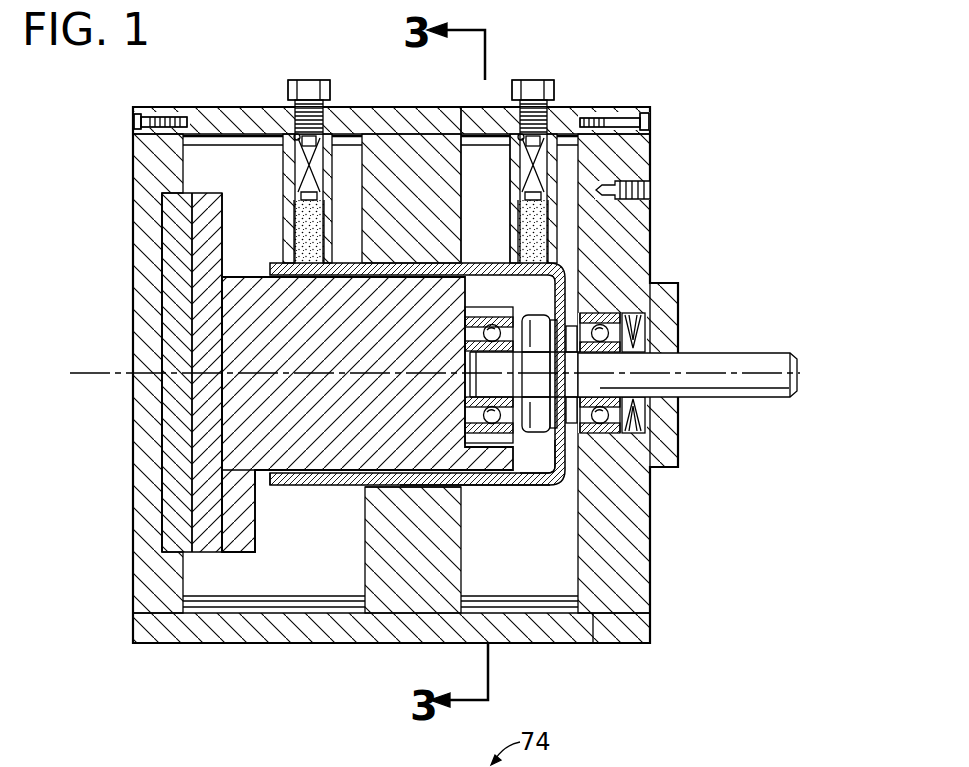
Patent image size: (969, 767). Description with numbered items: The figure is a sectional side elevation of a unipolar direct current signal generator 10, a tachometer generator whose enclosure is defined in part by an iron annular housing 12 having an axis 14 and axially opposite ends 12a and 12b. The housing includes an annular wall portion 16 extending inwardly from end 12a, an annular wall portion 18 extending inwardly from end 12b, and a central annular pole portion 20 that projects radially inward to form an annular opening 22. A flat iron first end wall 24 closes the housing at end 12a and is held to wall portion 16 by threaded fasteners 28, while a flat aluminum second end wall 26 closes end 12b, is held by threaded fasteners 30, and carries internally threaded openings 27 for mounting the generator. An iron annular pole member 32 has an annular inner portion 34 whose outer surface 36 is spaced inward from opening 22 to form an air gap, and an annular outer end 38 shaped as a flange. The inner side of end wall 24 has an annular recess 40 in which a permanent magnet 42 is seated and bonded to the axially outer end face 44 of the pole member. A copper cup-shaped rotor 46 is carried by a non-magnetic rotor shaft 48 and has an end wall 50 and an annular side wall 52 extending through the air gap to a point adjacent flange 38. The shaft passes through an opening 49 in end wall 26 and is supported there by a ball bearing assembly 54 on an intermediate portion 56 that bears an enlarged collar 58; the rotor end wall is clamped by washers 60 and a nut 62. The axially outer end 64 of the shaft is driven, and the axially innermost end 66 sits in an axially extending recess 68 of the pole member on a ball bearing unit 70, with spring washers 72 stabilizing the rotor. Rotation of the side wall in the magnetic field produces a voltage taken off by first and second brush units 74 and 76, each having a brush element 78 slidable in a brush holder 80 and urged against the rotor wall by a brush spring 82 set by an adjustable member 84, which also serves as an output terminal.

The unipolar direct current signal generator 10 is at (268, 74).
The annular housing 12 is at (222, 108).
The housing end 12a is at (168, 116).
The housing end 12b is at (590, 112).
The axis 14 is at (100, 366).
The annular wall portion 16 is at (205, 110).
The annular wall portion 18 is at (470, 120).
The annular pole portion 20 is at (418, 145).
The annular opening 22 is at (372, 485).
The first end wall 24 is at (145, 178).
The second end wall 26 is at (632, 240).
The internally threaded opening 27 is at (652, 188).
The threaded fastener 28 is at (134, 117).
The threaded fastener 30 is at (652, 120).
The annular pole member 32 is at (259, 479).
The annular inner portion 34 is at (455, 478).
The outer surface 36 is at (425, 490).
The annular outer end 38 is at (237, 540).
The annular recess 40 is at (175, 196).
The permanent magnet 42 is at (175, 455).
The axially outer end face 44 is at (235, 480).
The cup-shaped rotor 46 is at (508, 489).
The rotor shaft 48 is at (682, 346).
The opening 49 is at (606, 318).
The end wall 50 is at (560, 448).
The annular side wall 52 is at (483, 262).
The ball bearing assembly 54 is at (625, 421).
The intermediate portion 56 is at (600, 398).
The radially enlarged collar 58 is at (578, 362).
The washers 60 is at (551, 412).
The nut 62 is at (535, 330).
The axially outer end 64 is at (762, 352).
The axially innermost end 66 is at (488, 363).
The axially extending recess 68 is at (480, 320).
The ball bearing unit 70 is at (487, 413).
The spring washers 72 is at (640, 331).
The first brush unit 74 is at (531, 78).
The second brush unit 76 is at (313, 78).
The brush element 78 is at (305, 222).
The brush holder 80 is at (283, 152).
The brush spring 82 is at (297, 160).
The adjustable member 84 is at (330, 93).